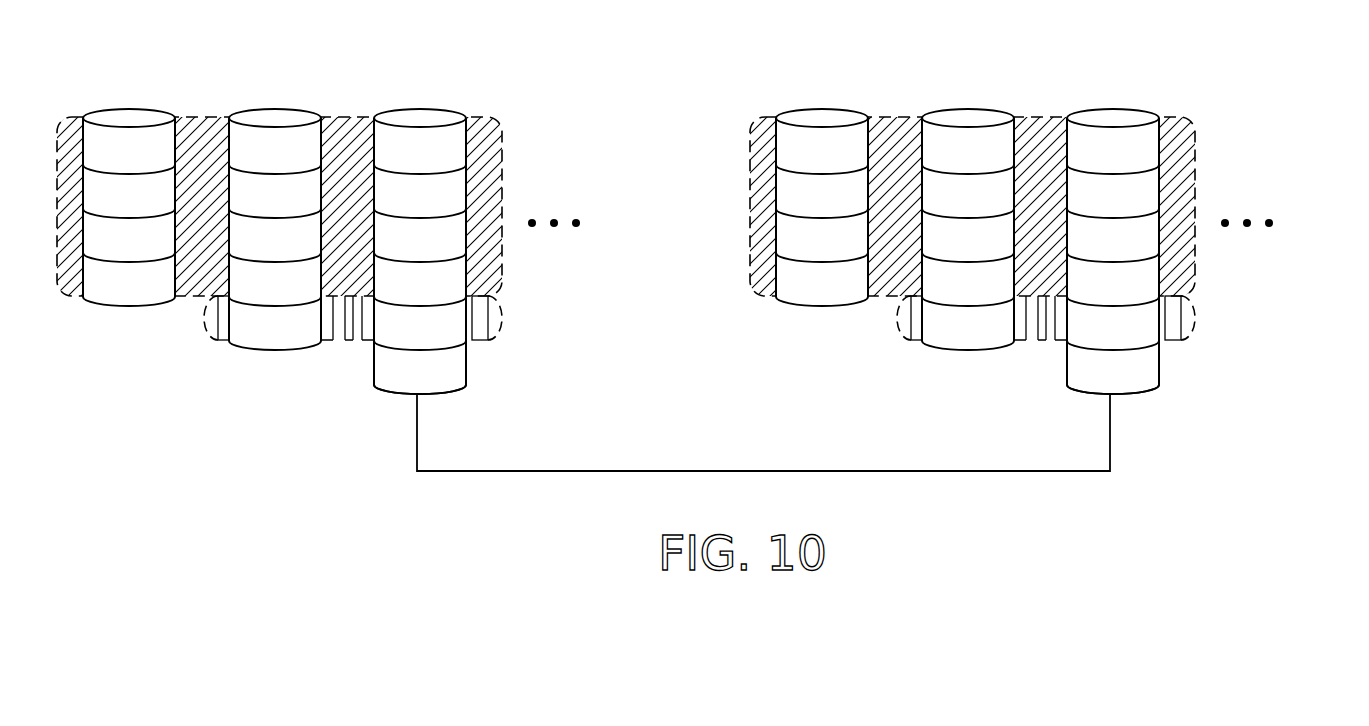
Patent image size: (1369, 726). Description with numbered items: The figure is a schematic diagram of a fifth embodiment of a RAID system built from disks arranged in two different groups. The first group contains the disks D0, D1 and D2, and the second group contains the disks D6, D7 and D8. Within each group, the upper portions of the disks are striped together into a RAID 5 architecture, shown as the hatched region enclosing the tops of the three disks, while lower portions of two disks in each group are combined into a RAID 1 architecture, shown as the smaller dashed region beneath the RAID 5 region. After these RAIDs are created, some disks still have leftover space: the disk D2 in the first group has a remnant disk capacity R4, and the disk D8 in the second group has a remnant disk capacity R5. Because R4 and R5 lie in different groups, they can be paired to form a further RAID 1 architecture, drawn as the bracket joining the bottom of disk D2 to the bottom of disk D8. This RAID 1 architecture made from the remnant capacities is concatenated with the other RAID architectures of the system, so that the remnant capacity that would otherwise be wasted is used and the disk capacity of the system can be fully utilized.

The disk D0 is at (133, 116).
The disk D1 is at (276, 116).
The disk D2 is at (421, 116).
The disk D6 is at (826, 116).
The disk D7 is at (969, 116).
The disk D8 is at (1114, 116).
The remnant disk capacity R4 is at (420, 367).
The remnant disk capacity R5 is at (1113, 367).
The RAID 5 architecture RAID 5 is at (495, 186).
The RAID 1 architecture RAID 1 is at (495, 316).